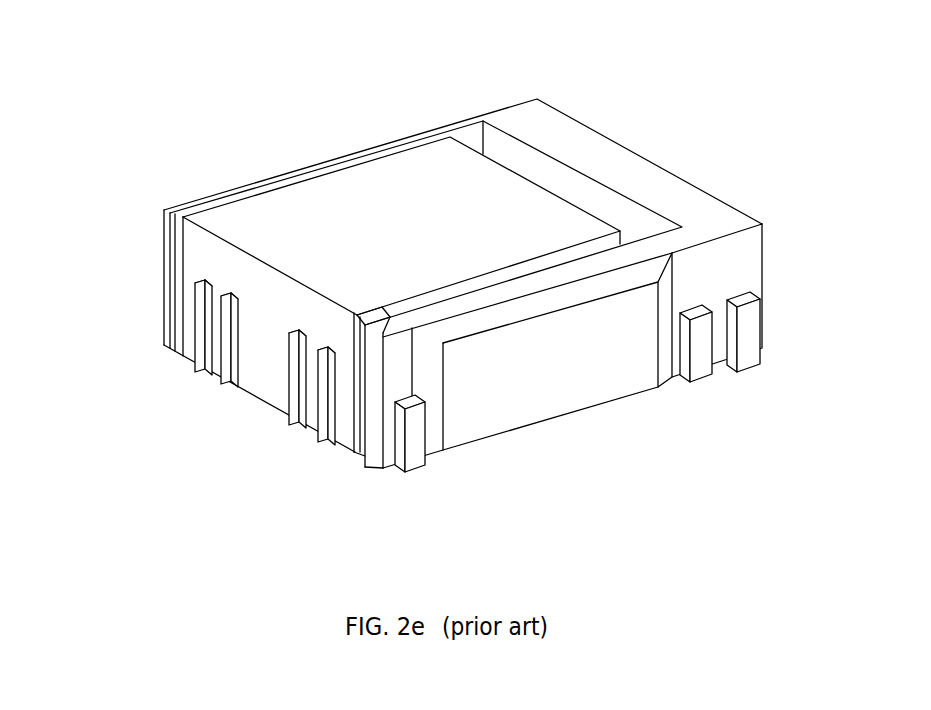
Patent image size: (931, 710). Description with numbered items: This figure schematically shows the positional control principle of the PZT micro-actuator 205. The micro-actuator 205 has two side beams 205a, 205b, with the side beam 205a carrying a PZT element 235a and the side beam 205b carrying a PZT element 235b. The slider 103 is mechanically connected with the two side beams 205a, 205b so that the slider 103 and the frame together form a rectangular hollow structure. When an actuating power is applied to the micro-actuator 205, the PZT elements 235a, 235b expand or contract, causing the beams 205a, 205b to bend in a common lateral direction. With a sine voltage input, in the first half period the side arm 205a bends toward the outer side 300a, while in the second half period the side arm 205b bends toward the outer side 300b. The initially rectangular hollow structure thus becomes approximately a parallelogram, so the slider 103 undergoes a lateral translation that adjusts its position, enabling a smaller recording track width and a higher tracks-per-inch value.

The PZT micro-actuator 205 is at (528, 125).
The slider 103 is at (400, 215).
The outer side 300b is at (182, 188).
The PZT element 235b is at (167, 261).
The side beam 205a is at (178, 345).
The side beam 205b is at (380, 430).
The PZT element 235a is at (473, 397).
The outer side 300a is at (518, 447).